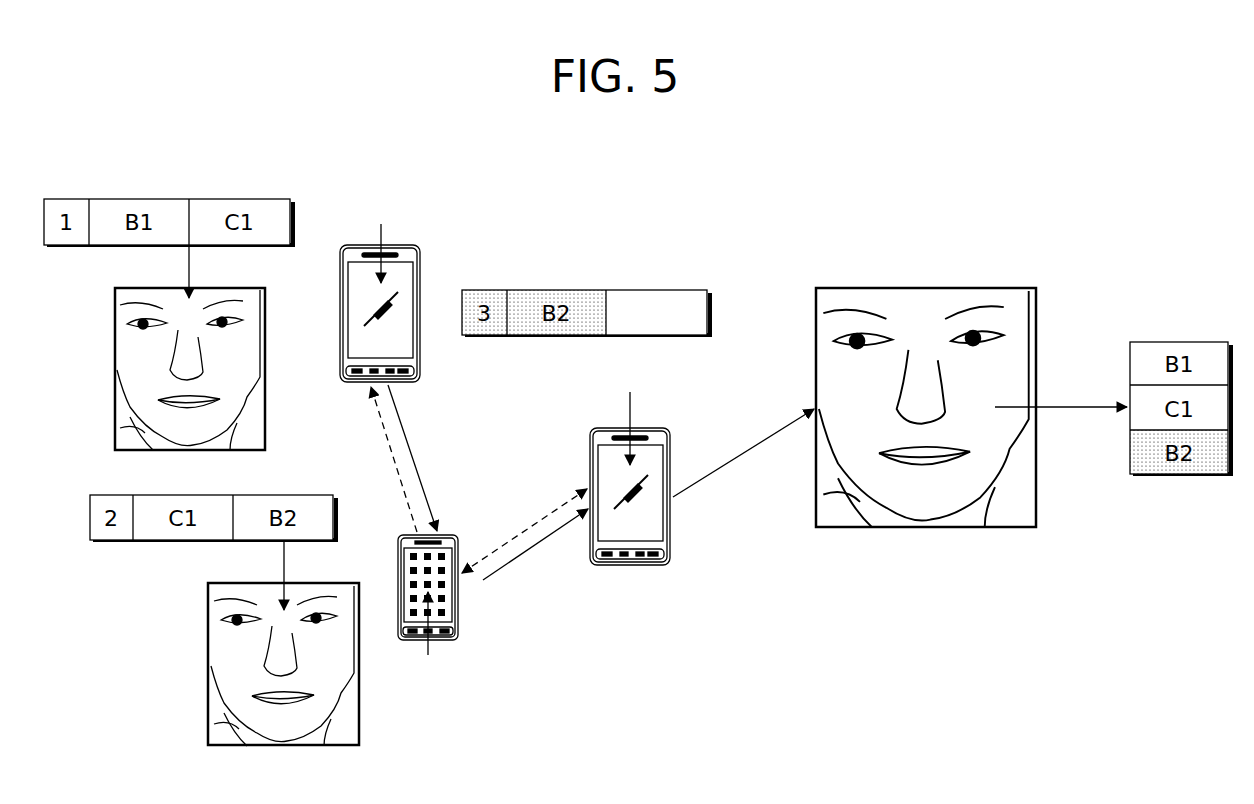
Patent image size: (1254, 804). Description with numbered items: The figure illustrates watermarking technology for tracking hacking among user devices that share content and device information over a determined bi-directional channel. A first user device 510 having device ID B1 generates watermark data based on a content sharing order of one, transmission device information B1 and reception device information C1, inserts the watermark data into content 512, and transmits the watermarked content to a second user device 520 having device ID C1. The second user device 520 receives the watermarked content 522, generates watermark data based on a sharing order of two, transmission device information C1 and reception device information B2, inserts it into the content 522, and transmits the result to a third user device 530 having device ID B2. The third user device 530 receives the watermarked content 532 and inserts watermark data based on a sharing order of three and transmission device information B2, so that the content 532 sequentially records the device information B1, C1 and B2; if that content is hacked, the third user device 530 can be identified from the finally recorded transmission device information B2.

The first user device 510 is at (423, 281).
The content 512 is at (233, 299).
The second user device 520 is at (460, 617).
The watermarked content 522 is at (325, 581).
The third user device 530 is at (643, 426).
The watermarked content 532 is at (965, 286).